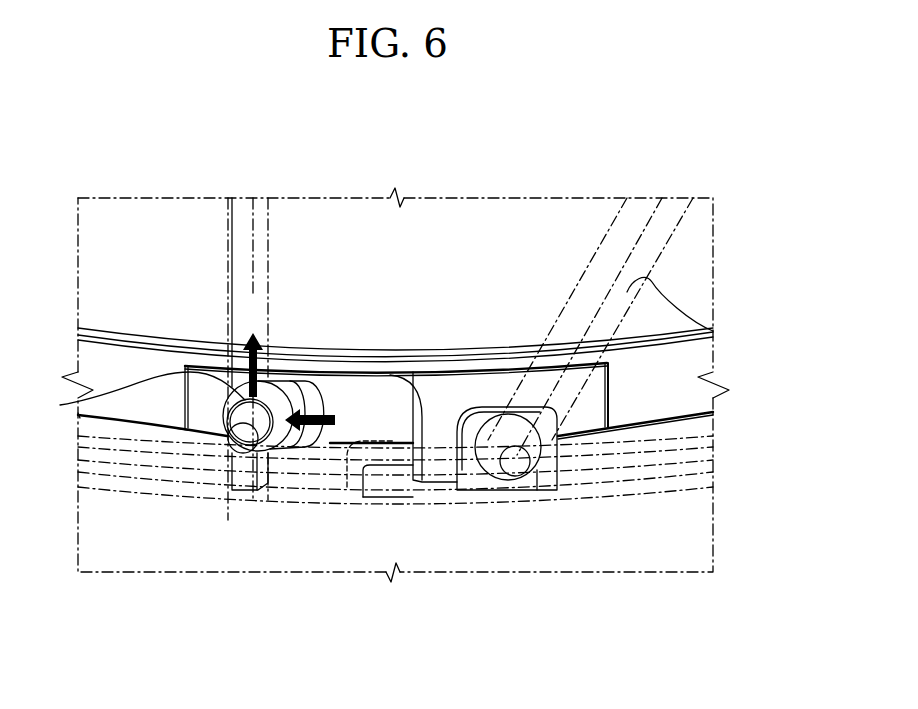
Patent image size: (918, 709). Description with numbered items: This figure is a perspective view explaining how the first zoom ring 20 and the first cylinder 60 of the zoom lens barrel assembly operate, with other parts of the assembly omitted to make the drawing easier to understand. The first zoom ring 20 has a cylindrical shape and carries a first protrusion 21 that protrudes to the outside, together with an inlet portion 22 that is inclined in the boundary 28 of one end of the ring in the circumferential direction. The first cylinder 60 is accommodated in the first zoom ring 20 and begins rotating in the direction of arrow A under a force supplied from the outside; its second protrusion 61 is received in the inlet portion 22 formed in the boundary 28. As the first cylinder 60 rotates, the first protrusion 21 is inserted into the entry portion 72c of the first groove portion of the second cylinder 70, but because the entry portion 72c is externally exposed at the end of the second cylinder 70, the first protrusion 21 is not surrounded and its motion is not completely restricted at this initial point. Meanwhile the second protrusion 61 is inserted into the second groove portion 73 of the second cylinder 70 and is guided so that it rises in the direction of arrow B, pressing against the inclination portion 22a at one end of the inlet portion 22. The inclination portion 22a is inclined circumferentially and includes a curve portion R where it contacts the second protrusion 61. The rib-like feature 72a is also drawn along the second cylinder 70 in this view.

The first zoom ring 20 is at (155, 404).
The first protrusion 21 is at (533, 442).
The inlet portion 22 is at (358, 499).
The inclination portion 22a is at (215, 430).
The boundary 28 is at (110, 422).
The first cylinder 60 is at (372, 434).
The second protrusion 61 is at (242, 437).
The second cylinder 70 is at (571, 512).
The upper rib 72a is at (713, 331).
The entry portion 72c is at (546, 521).
The second groove portion 73 is at (239, 493).
The curve portion R is at (60, 405).
The arrow A is at (321, 421).
The arrow B is at (253, 350).